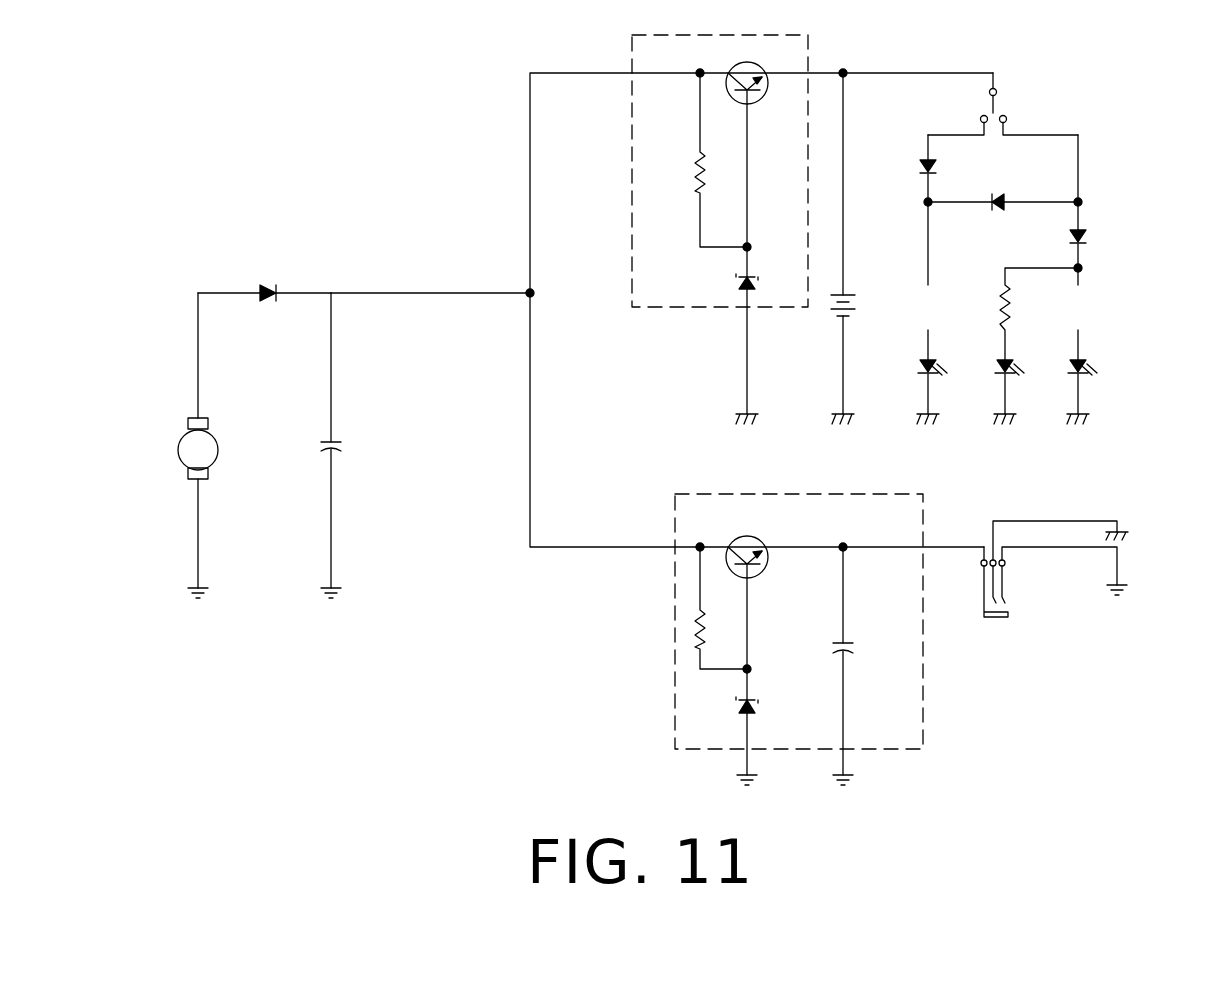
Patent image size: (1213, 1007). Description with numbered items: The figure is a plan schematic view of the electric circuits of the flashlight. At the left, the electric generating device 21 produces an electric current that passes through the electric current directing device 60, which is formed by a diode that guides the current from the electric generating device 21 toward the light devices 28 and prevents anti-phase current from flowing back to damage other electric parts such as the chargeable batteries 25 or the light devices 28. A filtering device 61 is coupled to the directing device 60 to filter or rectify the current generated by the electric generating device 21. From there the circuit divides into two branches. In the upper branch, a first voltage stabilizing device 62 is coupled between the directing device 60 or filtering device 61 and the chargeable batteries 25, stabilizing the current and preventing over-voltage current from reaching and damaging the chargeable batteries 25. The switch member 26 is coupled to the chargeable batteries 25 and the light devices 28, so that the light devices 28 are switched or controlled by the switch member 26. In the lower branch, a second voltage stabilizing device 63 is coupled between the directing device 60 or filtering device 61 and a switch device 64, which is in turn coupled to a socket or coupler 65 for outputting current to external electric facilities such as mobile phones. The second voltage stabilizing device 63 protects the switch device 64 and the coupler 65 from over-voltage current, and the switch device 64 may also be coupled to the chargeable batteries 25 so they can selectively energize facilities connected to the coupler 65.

The electric current directing device 60 is at (274, 246).
The electric generating device 21 is at (212, 457).
The filtering device 61 is at (343, 468).
The first voltage stabilizing device 62 is at (790, 88).
The chargeable batteries 25 is at (828, 320).
The switch member 26 is at (1064, 92).
The light devices 28 is at (1132, 390).
The second voltage stabilizing device 63 is at (685, 680).
The switch device 64 is at (1013, 604).
The coupler 65 is at (1004, 641).